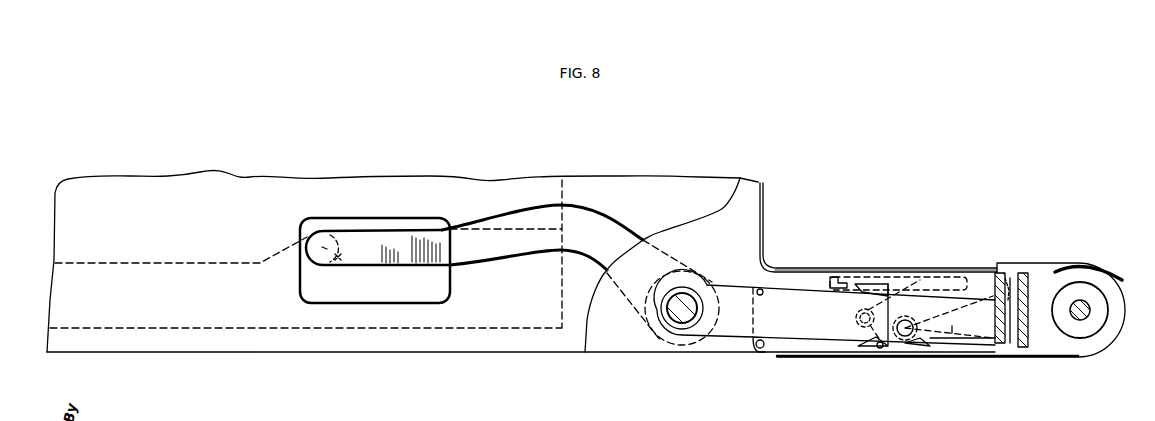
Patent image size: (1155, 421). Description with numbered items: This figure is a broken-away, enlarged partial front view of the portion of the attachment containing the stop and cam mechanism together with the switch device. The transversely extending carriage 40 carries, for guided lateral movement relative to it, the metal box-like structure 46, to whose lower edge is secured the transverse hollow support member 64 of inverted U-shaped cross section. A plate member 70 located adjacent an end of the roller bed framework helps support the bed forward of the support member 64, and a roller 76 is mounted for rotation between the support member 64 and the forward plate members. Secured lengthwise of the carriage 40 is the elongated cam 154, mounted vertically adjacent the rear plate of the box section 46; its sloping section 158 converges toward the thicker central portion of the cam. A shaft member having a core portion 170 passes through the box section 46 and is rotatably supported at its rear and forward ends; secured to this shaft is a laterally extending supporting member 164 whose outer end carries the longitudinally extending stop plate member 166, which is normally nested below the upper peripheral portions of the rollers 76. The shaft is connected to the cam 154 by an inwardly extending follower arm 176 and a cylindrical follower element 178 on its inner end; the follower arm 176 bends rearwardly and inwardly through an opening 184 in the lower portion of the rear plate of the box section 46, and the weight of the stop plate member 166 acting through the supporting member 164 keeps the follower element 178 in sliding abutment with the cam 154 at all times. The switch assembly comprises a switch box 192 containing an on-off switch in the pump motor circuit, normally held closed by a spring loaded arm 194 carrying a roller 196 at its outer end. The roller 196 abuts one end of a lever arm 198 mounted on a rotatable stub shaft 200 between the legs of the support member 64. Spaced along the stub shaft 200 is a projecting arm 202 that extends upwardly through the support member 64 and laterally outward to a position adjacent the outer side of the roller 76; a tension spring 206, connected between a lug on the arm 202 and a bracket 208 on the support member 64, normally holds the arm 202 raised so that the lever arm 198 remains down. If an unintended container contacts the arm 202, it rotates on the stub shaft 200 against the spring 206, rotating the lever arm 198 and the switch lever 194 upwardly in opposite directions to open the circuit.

The carriage 40 is at (455, 330).
The box-like structure 46 is at (548, 343).
The hollow support member 64 is at (787, 268).
The plate member 70 is at (1027, 338).
The roller 76 is at (1082, 327).
The cam 154 is at (186, 262).
The sloping section 158 is at (280, 250).
The supporting member 164 is at (812, 325).
The stop plate member 166 is at (990, 293).
The core portion 170 is at (680, 318).
The follower arm 176 is at (535, 248).
The follower element 178 is at (338, 262).
The opening 184 is at (412, 297).
The switch box 192 is at (880, 348).
The spring loaded arm 194 is at (898, 320).
The roller 196 is at (938, 280).
The lever arm 198 is at (925, 348).
The stub shaft 200 is at (1003, 342).
The projecting arm 202 is at (1080, 263).
The tension spring 206 is at (890, 275).
The bracket 208 is at (827, 270).